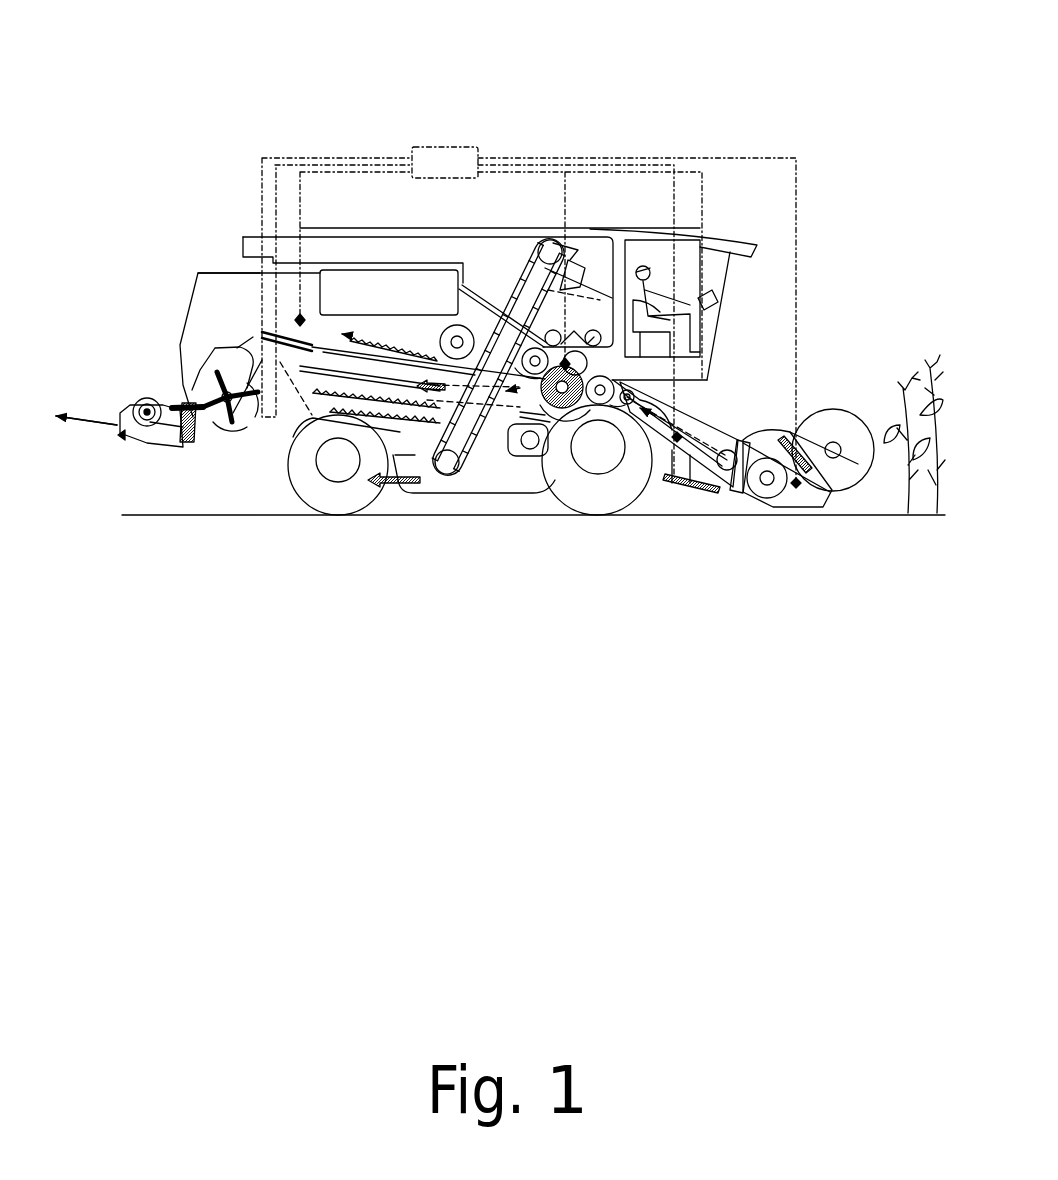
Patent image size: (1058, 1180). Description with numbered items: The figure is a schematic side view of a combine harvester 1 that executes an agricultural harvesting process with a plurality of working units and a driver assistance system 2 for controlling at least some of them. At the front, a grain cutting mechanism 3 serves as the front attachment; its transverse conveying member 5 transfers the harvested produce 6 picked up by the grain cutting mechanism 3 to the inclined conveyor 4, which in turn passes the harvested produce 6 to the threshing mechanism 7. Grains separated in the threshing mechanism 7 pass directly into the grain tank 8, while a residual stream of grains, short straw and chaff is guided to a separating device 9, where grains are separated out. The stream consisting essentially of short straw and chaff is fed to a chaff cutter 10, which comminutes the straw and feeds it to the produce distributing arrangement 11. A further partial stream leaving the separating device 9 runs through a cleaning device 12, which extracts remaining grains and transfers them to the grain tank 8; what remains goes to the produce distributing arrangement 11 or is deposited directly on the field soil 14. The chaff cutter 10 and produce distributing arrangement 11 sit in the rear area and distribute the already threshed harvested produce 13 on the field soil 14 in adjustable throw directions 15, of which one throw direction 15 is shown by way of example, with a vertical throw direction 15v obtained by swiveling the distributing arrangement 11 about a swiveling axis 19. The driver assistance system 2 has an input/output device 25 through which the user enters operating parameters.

The combine harvester 1 is at (763, 88).
The driver assistance system 2 is at (438, 163).
The grain cutting mechanism 3 is at (838, 397).
The inclined conveyor 4 is at (717, 411).
The transverse conveying member 5 is at (767, 512).
The harvested produce 6 is at (685, 482).
The threshing mechanism 7 is at (560, 430).
The grain tank 8 is at (495, 280).
The separating device 9 is at (388, 330).
The chaff cutter 10 is at (236, 447).
The produce distributing arrangement 11 is at (142, 458).
The cleaning device 12 is at (397, 430).
The harvested produce 13 is at (240, 348).
The field soil 14 is at (277, 503).
The throw direction 15 is at (100, 412).
The vertical throw direction 15v is at (86, 420).
The swiveling axis 19 is at (183, 420).
The input/output device 25 is at (717, 312).